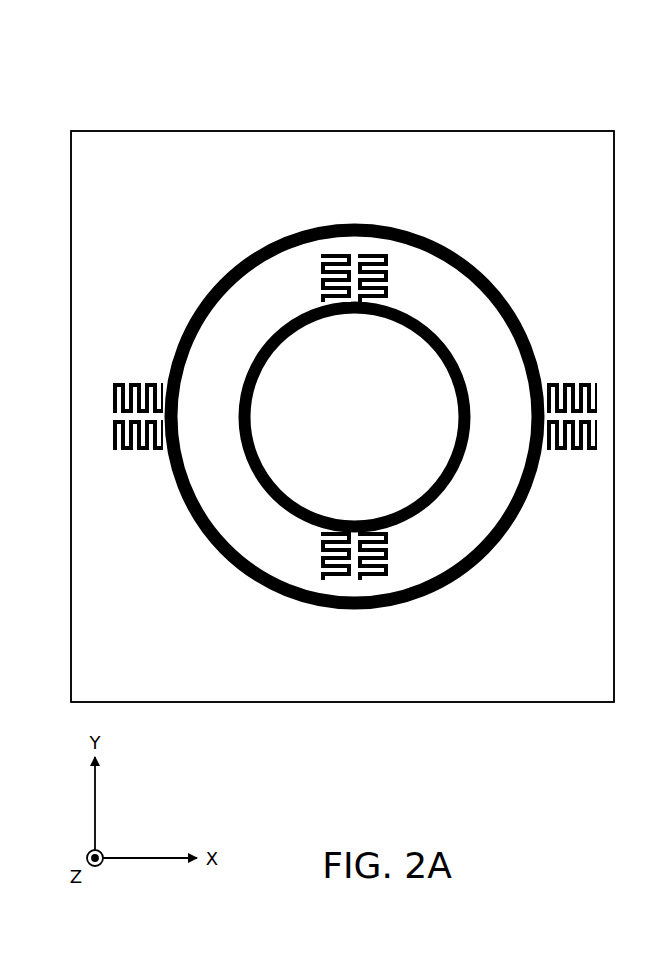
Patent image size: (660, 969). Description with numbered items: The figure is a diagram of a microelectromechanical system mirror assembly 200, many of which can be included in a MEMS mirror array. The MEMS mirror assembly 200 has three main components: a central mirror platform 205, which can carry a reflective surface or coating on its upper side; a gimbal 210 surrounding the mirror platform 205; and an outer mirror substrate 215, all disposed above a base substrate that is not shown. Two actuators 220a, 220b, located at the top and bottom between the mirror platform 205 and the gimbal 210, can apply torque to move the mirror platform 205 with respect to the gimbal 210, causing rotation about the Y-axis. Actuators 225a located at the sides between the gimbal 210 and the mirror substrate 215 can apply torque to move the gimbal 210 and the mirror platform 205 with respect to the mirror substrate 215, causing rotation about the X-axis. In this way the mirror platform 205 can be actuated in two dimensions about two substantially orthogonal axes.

The MEMS mirror assembly 200 is at (197, 80).
The mirror platform 205 is at (355, 417).
The gimbal 210 is at (354, 416).
The mirror substrate 215 is at (342, 416).
The actuator 220a is at (316, 279).
The actuator 220b is at (316, 555).
The actuator 225a is at (578, 381).